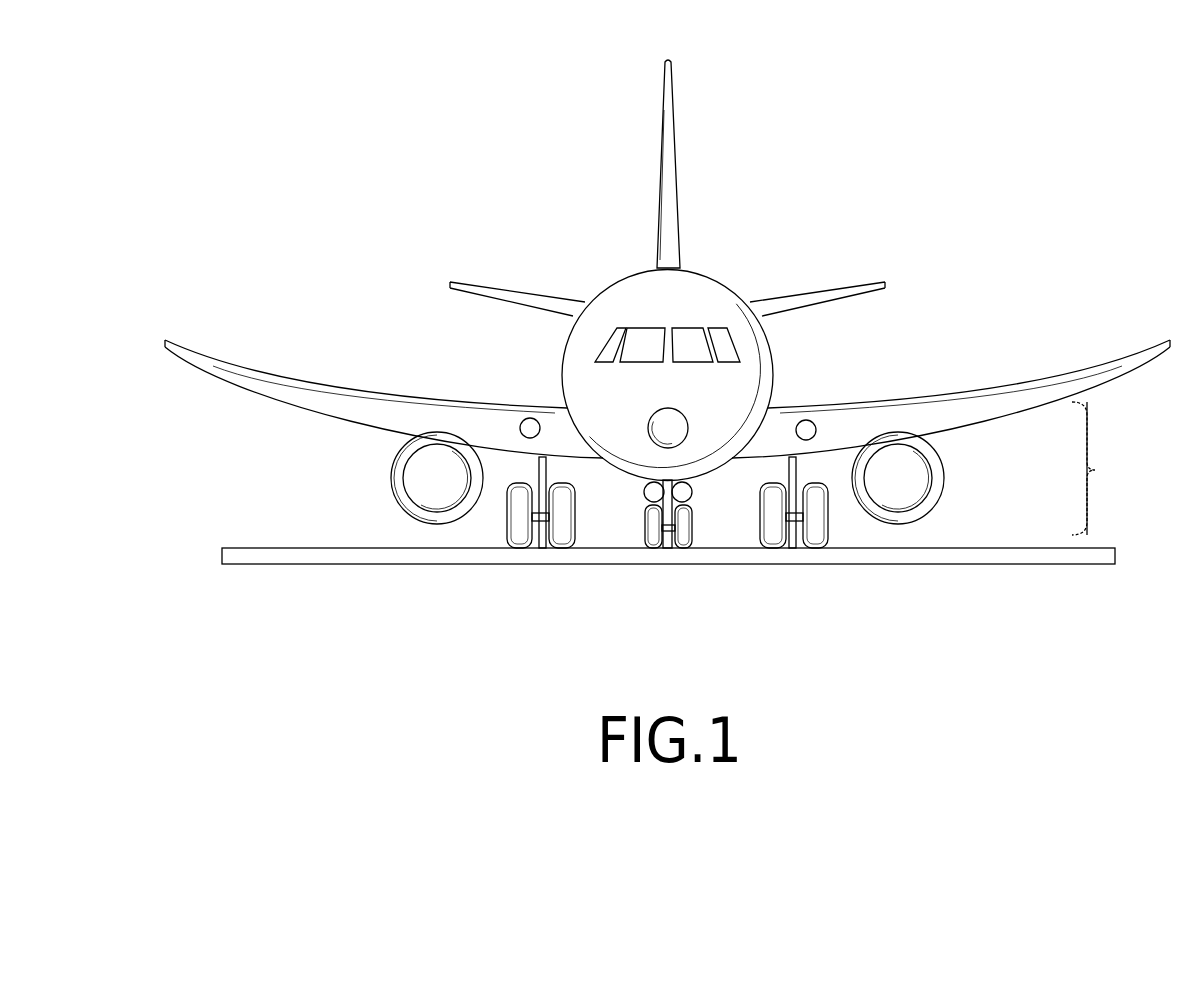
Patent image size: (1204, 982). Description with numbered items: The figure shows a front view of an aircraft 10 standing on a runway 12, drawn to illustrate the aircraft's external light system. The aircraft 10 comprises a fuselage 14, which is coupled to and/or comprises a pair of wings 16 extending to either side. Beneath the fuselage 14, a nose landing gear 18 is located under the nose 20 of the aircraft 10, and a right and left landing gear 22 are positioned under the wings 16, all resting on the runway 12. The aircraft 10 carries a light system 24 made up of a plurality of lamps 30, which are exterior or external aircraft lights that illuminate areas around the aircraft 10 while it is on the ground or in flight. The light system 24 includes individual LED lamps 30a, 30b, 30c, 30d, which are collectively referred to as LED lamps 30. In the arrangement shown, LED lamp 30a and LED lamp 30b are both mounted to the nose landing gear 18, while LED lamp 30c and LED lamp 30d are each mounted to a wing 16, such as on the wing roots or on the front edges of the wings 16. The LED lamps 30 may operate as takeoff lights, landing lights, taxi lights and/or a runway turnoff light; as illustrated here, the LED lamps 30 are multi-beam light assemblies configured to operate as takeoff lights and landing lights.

The aircraft 10 is at (313, 152).
The runway 12 is at (982, 548).
The fuselage 14 is at (761, 360).
The wings 16 is at (368, 412).
The nose landing gear 18 is at (663, 550).
The nose 20 is at (673, 413).
The right and left landing gear 22 is at (540, 550).
The light system 24 is at (1087, 470).
The LED lamps 30 is at (526, 418).
The LED lamp 30a is at (646, 493).
The LED lamp 30b is at (692, 493).
The LED lamp 30c is at (521, 420).
The LED lamp 30d is at (815, 421).